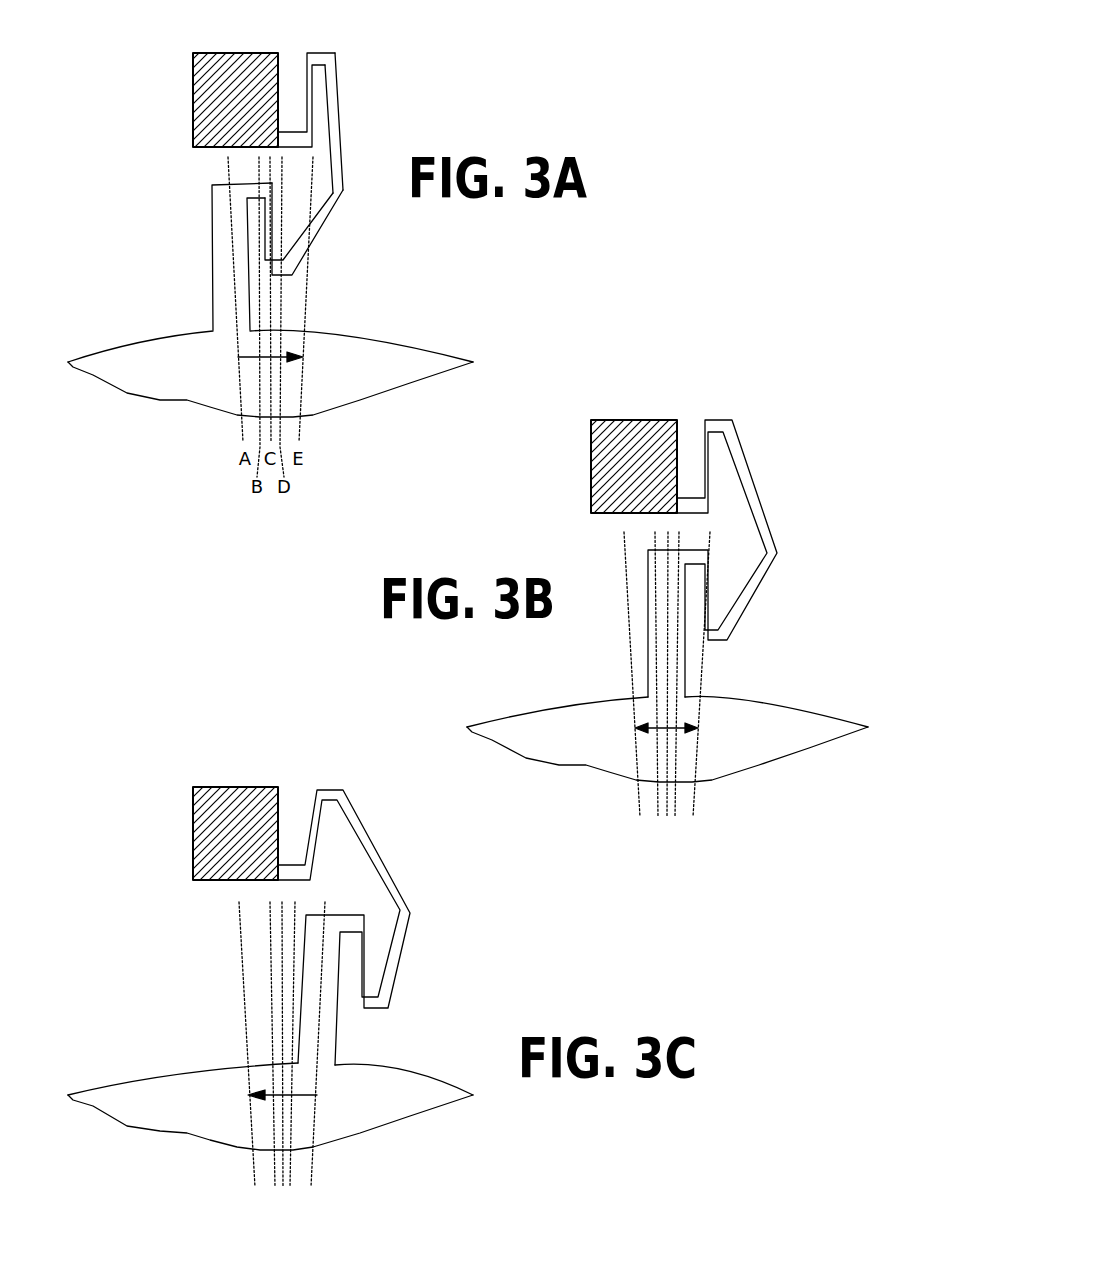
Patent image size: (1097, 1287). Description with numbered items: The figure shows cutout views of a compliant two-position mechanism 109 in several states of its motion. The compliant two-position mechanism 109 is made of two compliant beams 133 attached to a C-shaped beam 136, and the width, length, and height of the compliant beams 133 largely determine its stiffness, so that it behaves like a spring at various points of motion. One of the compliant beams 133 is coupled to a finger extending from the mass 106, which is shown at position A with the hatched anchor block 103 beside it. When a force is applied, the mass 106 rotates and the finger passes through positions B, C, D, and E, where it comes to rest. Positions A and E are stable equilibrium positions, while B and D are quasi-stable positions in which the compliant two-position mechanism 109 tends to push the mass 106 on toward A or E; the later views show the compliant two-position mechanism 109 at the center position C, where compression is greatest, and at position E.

In FIG. 3A, the support block / mounting body 103 is at (211, 56).
In FIG. 3B, the support block / mounting body 103 is at (623, 427).
In FIG. 3C, the support block / mounting body 103 is at (220, 785).
In FIG. 3A, the mass 106 is at (387, 347).
In FIG. 3B, the mass 106 is at (762, 713).
In FIG. 3C, the mass 106 is at (383, 1087).
In FIG. 3A, the compliant two-position mechanism 109 is at (333, 169).
In FIG. 3B, the compliant two-position mechanism 109 is at (781, 453).
In FIG. 3C, the compliant two-position mechanism 109 is at (403, 820).
In FIG. 3A, the compliant beam 133 is at (307, 73).
In FIG. 3A, the C-shaped beam 136 is at (337, 95).